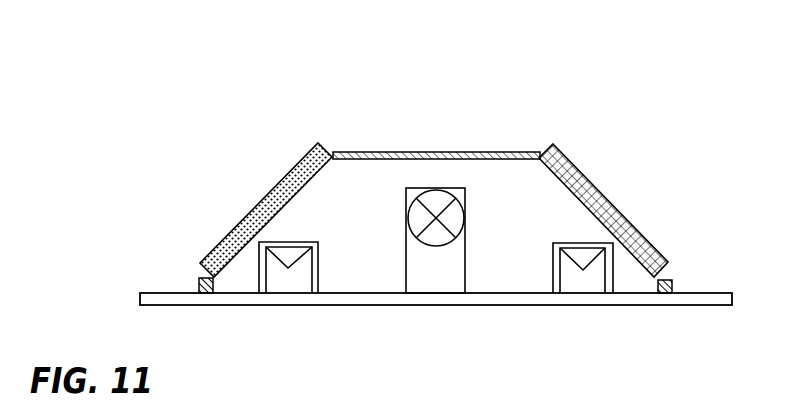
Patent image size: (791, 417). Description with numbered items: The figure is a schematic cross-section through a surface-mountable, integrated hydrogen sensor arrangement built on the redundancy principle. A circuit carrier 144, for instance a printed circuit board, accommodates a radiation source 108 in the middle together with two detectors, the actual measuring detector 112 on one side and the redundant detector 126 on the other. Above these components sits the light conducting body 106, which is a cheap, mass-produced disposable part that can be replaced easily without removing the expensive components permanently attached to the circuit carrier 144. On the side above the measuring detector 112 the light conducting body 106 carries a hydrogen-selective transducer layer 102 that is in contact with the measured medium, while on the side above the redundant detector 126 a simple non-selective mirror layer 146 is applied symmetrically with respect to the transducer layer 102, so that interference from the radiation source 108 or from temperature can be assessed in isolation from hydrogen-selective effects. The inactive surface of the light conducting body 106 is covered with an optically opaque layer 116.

The hydrogen-selective transducer layer 102 is at (232, 232).
The light conducting body 106 is at (372, 224).
The radiation source 108 is at (436, 246).
The measuring detector 112 is at (288, 283).
The optically opaque layer 116 is at (197, 283).
The redundant detector 126 is at (583, 283).
The circuit carrier 144 is at (700, 293).
The non-selective mirror layer 146 is at (645, 228).